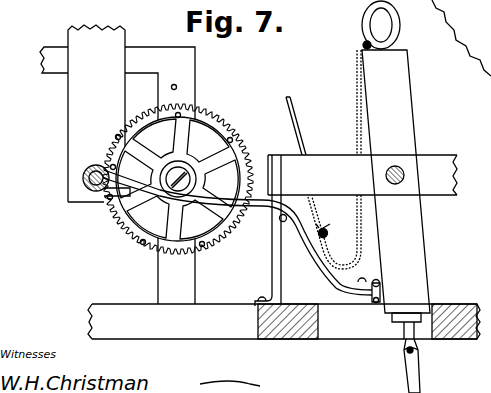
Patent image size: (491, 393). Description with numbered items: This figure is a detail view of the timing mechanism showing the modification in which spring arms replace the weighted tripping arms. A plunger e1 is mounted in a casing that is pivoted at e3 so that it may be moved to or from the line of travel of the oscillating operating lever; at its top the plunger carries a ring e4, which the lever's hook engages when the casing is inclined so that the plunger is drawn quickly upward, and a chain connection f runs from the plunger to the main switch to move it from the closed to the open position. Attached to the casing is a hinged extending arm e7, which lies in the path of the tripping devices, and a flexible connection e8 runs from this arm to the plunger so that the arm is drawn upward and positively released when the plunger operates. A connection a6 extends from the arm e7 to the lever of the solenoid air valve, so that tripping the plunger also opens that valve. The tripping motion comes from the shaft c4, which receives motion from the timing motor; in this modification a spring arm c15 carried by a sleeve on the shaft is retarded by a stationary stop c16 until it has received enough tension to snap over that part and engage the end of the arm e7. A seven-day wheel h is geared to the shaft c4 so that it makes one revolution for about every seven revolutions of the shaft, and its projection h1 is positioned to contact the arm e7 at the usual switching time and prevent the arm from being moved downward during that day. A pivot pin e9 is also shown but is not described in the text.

The seven-day wheel h is at (115, 221).
The projection h1 is at (262, 92).
The shaft c4 is at (84, 182).
The spring arm c15 is at (100, 205).
The stationary stop c16 is at (177, 86).
The pivot e3 is at (401, 169).
The connection a6 is at (296, 143).
The plunger e1 is at (395, 102).
The ring e4 is at (364, 30).
The flexible connection e8 is at (356, 118).
The extending arm e7 is at (263, 207).
The pivot pin e9 is at (284, 222).
The chain connection f is at (400, 352).